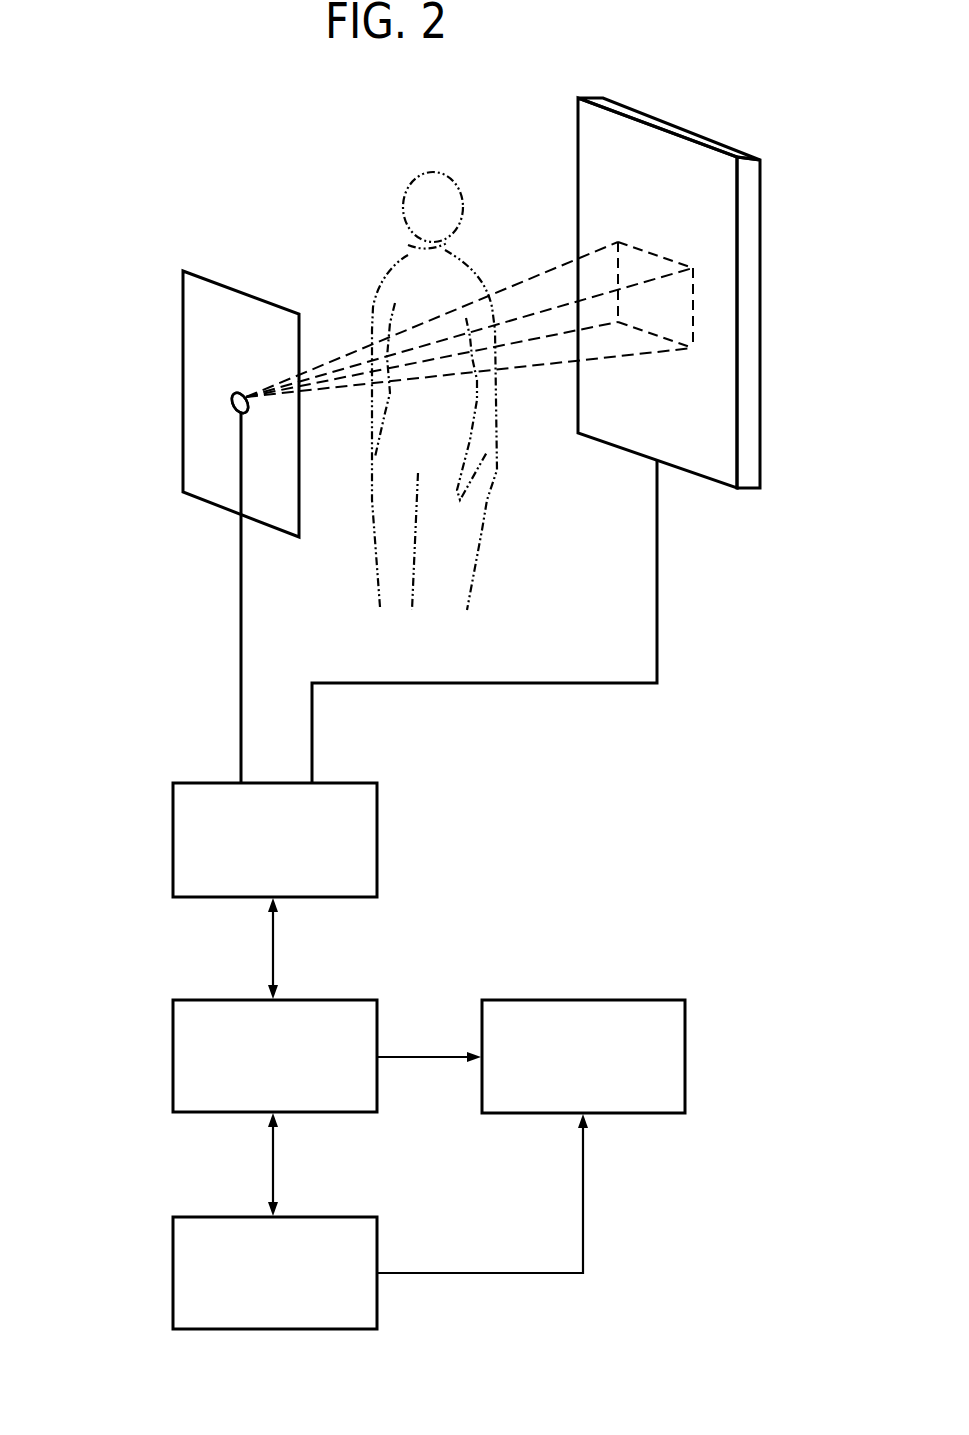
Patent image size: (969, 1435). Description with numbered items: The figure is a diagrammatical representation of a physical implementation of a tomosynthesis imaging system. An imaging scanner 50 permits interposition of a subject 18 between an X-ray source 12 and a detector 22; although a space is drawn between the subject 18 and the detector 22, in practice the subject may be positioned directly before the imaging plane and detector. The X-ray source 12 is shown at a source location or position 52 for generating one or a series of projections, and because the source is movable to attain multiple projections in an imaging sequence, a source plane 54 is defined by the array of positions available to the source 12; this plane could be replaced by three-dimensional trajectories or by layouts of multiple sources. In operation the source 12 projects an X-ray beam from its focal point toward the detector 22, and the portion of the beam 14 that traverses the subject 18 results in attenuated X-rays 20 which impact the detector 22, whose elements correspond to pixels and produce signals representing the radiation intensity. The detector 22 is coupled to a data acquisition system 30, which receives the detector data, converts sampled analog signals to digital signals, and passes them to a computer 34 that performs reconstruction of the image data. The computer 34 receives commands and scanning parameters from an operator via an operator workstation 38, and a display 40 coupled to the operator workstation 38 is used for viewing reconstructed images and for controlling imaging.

The X-ray source 12 is at (235, 410).
The beam 14 is at (340, 353).
The subject 18 is at (380, 264).
The attenuated X-rays 20 is at (524, 280).
The detector 22 is at (682, 129).
The data acquisition system 30 is at (173, 838).
The computer 34 is at (173, 1053).
The operator workstation 38 is at (173, 1272).
The display 40 is at (685, 1060).
The imaging scanner 50 is at (155, 190).
The source location 52 is at (240, 393).
The source plane 54 is at (238, 291).